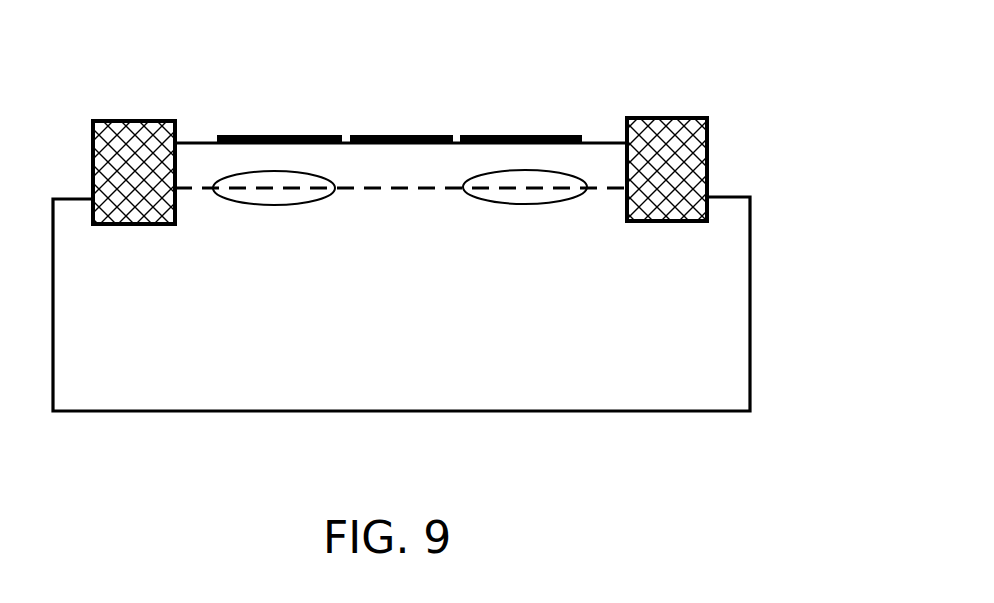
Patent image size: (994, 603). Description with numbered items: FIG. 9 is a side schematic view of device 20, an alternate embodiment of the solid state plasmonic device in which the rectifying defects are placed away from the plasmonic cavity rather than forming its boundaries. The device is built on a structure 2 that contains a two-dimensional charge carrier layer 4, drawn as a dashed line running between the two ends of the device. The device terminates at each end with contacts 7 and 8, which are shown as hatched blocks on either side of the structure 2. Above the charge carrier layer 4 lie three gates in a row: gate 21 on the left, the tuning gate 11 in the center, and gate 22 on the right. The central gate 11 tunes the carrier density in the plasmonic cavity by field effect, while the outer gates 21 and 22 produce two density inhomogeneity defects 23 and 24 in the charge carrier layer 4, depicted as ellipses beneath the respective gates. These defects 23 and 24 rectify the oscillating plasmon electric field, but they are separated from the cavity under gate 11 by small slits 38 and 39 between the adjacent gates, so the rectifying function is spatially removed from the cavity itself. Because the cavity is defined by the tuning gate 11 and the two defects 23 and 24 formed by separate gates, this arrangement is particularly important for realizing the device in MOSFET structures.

The structure 2 is at (142, 400).
The two-dimensional charge carrier layer 4 is at (403, 188).
The contact 7 is at (122, 143).
The contact 8 is at (660, 148).
The top gate 11 is at (387, 135).
The device 20 is at (744, 125).
The gate 21 is at (250, 137).
The gate 22 is at (535, 134).
The density inhomogeneity defect 23 is at (270, 205).
The density inhomogeneity defect 24 is at (528, 204).
The slit 38 is at (346, 134).
The slit 39 is at (458, 131).